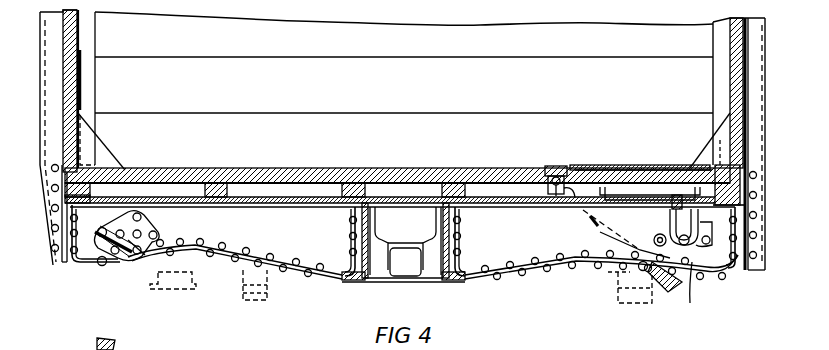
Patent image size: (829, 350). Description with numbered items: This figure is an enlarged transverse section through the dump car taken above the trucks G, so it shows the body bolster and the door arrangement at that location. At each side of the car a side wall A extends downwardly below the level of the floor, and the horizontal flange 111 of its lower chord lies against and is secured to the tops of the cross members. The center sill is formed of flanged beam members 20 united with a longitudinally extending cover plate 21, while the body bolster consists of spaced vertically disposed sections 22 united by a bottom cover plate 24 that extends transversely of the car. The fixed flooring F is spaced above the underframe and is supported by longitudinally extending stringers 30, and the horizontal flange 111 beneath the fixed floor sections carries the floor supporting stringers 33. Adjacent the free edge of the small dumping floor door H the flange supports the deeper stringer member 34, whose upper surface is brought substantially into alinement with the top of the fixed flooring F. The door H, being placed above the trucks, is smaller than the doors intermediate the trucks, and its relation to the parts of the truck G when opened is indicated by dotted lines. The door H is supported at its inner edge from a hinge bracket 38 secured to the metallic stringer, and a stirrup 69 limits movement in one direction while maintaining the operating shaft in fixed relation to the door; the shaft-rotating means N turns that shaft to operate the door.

The side wall A is at (78, 78).
The fixed flooring F is at (330, 178).
The small dumping floor door H is at (608, 175).
The shaft-rotating means N is at (115, 268).
The truck G is at (166, 275).
The flanged beam member 20 is at (367, 278).
The cover plate 21 is at (402, 204).
The vertically disposed section 22 is at (404, 240).
The bottom cover plate 24 is at (510, 282).
The stringer 30 is at (245, 175).
The floor supporting stringer 33 is at (115, 175).
The stringer member 34 is at (706, 167).
The hinge bracket 38 is at (572, 195).
The stirrup 69 is at (648, 207).
The horizontal flange 111 is at (724, 208).